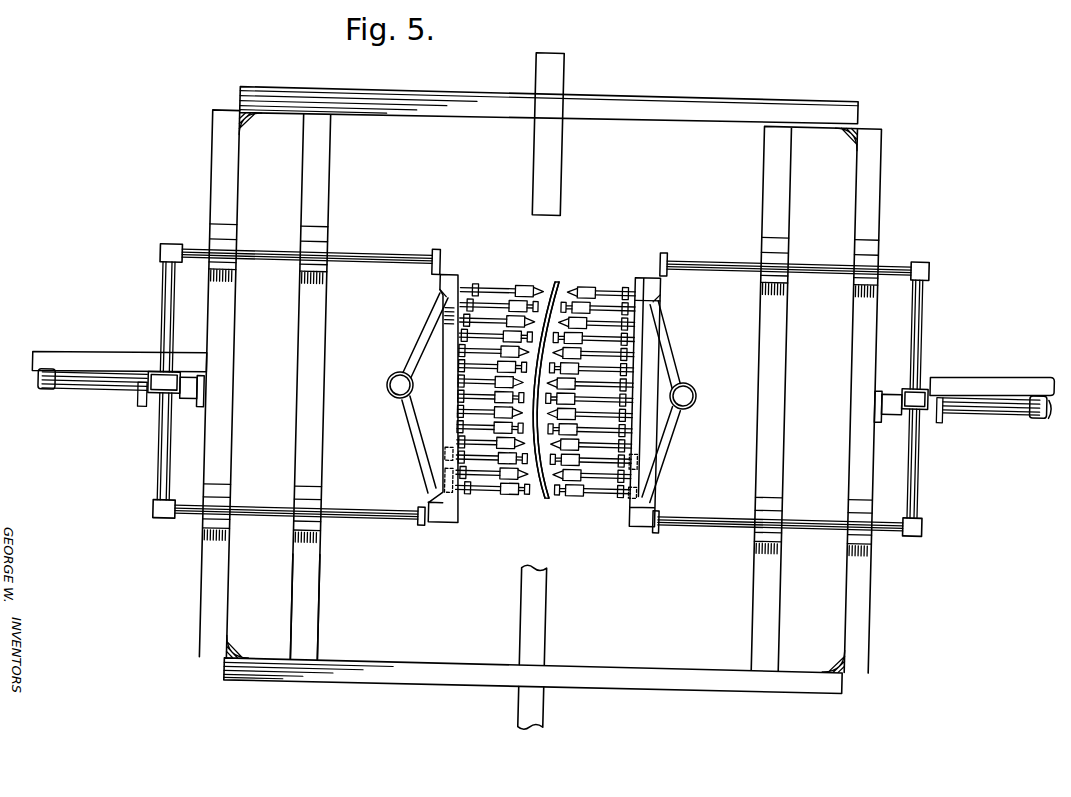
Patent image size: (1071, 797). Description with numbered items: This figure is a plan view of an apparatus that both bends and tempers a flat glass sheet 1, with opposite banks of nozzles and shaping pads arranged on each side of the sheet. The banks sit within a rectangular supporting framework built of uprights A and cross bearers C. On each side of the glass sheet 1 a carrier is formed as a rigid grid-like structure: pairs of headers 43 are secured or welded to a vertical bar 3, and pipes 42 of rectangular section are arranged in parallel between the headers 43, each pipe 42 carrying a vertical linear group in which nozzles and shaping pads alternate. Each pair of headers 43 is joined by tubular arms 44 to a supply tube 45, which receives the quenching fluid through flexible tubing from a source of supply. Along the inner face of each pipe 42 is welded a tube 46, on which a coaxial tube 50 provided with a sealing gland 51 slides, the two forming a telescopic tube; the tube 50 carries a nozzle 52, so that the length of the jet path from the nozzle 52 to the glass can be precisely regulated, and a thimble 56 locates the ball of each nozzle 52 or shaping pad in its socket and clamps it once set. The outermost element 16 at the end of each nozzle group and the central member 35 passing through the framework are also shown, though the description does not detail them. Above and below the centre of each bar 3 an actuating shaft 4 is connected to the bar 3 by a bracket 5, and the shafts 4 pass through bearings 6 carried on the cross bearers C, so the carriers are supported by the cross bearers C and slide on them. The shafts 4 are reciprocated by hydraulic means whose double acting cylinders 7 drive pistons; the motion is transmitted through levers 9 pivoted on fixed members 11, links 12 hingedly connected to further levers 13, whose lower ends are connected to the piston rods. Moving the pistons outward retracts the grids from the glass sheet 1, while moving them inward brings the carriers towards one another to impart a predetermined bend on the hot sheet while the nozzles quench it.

The glass sheet 1 is at (551, 506).
The vertical bar 3 is at (445, 274).
The actuating shaft 4 is at (274, 251).
The bracket 5 is at (433, 249).
The bearing 6 is at (327, 252).
The double acting cylinder 7 is at (192, 403).
The lever 9 is at (147, 370).
The fixed member 11 is at (72, 354).
The link 12 is at (77, 391).
The lever 13 is at (42, 381).
The pin tip 16 is at (543, 290).
The drive shaft 35 is at (557, 180).
The pipe 42 is at (443, 468).
The header 43 is at (443, 296).
The tubular arm 44 is at (425, 325).
The supply tube 45 is at (397, 375).
The tube 46 is at (460, 496).
The coaxial tube 50 is at (613, 286).
The sealing gland 51 is at (470, 496).
The nozzle 52 is at (538, 492).
The thimble 56 is at (587, 289).
The upright A is at (255, 126).
The cross bearer C is at (289, 585).